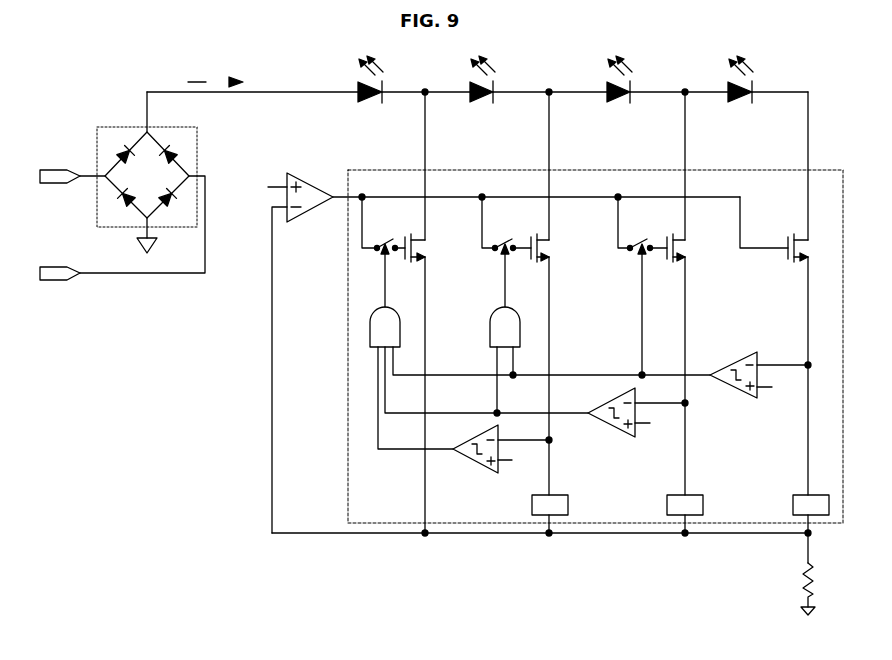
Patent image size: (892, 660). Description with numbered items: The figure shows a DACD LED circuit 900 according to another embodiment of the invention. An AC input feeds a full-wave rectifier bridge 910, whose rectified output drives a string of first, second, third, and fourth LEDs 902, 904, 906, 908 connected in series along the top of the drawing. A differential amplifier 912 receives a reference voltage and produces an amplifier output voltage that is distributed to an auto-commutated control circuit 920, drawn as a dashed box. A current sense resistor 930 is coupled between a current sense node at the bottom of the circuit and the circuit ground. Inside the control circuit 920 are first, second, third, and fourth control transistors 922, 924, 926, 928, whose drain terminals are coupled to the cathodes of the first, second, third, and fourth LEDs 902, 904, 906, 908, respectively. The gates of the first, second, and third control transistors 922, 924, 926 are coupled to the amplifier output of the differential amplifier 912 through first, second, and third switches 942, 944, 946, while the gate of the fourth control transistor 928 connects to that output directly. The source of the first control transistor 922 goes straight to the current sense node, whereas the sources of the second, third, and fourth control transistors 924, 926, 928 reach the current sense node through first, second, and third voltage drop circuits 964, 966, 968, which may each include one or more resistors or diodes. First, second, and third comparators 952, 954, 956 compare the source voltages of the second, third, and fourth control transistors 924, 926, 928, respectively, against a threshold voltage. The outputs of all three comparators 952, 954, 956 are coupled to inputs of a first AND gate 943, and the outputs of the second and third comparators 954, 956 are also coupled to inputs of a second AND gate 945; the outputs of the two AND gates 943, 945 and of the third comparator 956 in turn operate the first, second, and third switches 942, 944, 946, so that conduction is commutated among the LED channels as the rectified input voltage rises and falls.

The DACD LED circuit 900 is at (171, 50).
The full-wave rectifier bridge 910 is at (126, 126).
The differential amplifier 912 is at (285, 176).
The first LED 902 is at (358, 82).
The second LED 904 is at (470, 82).
The third LED 906 is at (607, 82).
The fourth LED 908 is at (728, 82).
The auto-commutated control circuit 920 is at (348, 478).
The first control transistor 922 is at (405, 236).
The second control transistor 924 is at (531, 236).
The third control transistor 926 is at (667, 236).
The fourth control transistor 928 is at (788, 237).
The first switch 942 is at (376, 249).
The second switch 944 is at (494, 250).
The third switch 946 is at (629, 250).
The first AND gate 943 is at (370, 326).
The second AND gate 945 is at (490, 326).
The first comparator 952 is at (473, 463).
The second comparator 954 is at (612, 430).
The third comparator 956 is at (732, 390).
The first voltage drop circuit 964 is at (532, 505).
The second voltage drop circuit 966 is at (667, 505).
The third voltage drop circuit 968 is at (795, 505).
The current sense resistor 930 is at (803, 572).